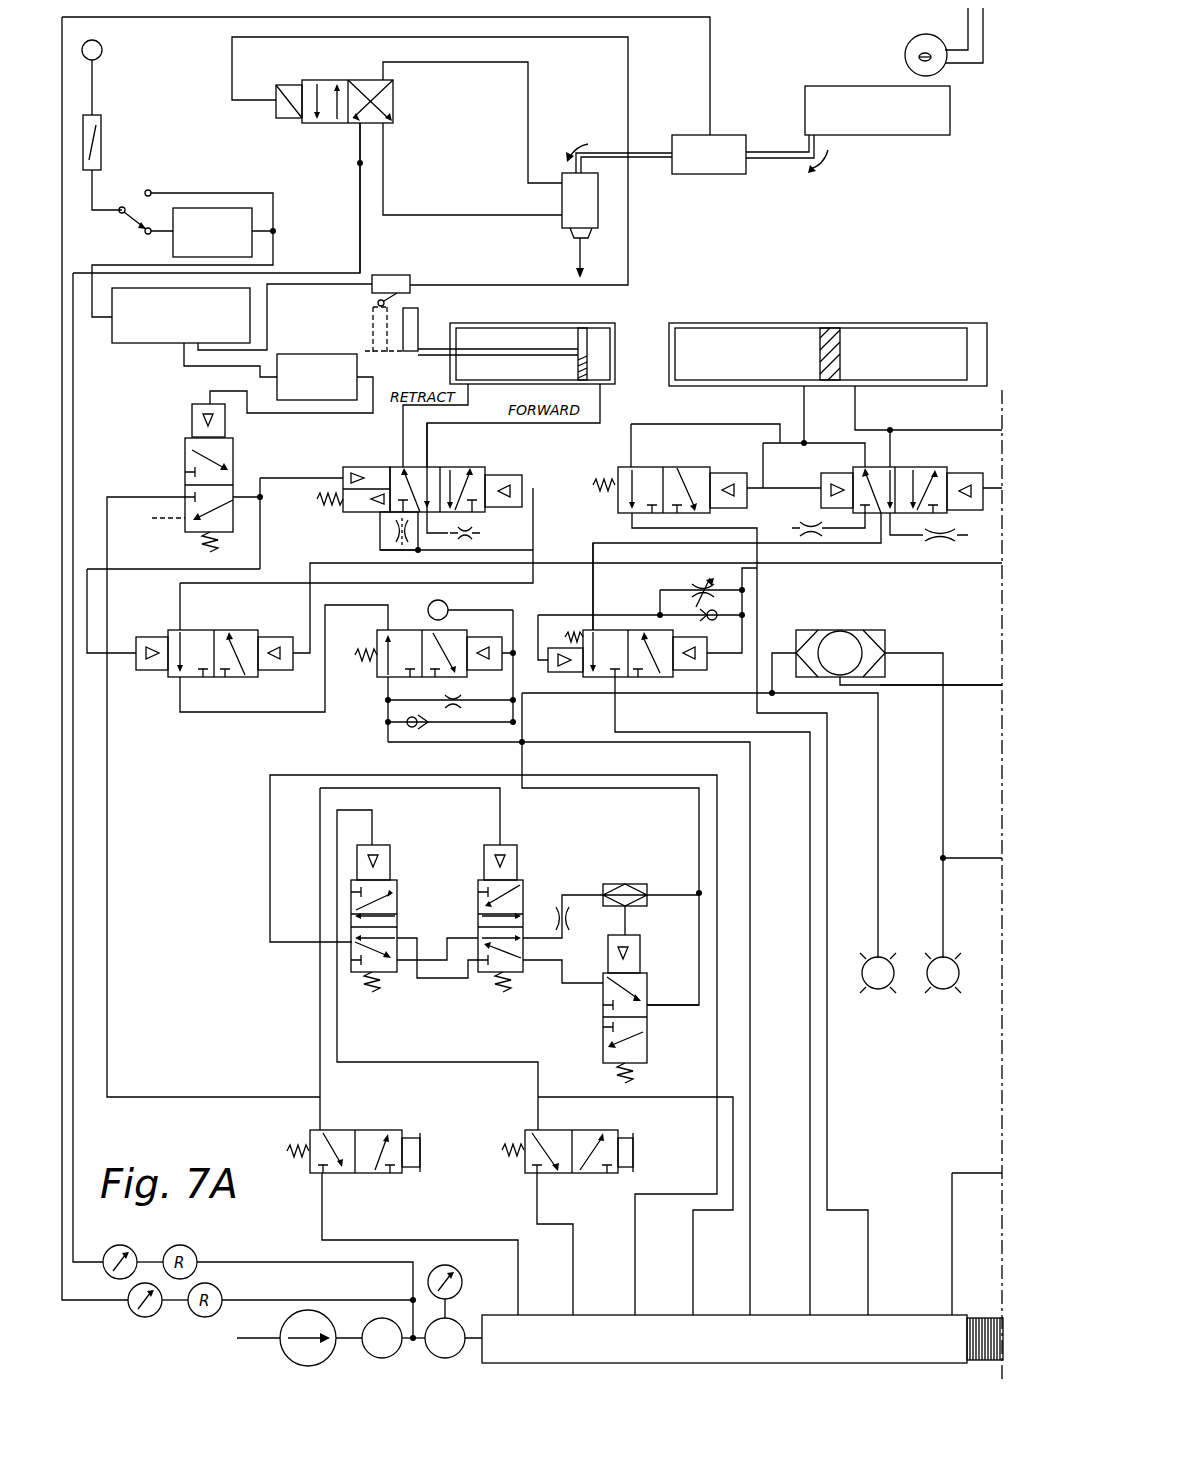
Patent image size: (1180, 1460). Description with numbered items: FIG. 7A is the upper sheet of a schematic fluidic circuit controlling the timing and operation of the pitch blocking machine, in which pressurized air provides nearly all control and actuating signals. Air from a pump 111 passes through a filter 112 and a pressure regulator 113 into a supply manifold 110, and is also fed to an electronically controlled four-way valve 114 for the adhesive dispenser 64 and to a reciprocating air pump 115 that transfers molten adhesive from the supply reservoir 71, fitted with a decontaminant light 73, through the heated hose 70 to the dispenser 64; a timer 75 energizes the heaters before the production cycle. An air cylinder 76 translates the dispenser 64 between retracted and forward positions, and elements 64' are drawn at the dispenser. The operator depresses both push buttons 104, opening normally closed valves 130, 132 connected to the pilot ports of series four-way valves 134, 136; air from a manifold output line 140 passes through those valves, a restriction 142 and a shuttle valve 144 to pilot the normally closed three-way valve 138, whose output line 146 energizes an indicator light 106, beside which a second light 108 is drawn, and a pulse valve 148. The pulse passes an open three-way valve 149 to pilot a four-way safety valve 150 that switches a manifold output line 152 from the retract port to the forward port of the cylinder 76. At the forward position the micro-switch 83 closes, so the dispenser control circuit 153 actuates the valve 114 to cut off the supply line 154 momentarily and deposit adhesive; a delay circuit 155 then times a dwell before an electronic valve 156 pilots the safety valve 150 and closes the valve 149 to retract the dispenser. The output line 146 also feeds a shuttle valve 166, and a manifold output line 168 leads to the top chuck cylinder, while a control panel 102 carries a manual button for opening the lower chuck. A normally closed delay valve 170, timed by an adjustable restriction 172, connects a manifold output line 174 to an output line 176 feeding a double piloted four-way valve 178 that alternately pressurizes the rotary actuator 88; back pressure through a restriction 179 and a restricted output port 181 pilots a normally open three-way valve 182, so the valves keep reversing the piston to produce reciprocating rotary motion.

The adhesive dispenser 64 is at (586, 211).
The dispenser position sensors 64' is at (471, 307).
The hose 70 is at (645, 150).
The supply tank 71 is at (863, 86).
The decontaminant light 73 is at (912, 40).
The timer 75 is at (252, 221).
The air cylinder 76 is at (616, 363).
The micro-switch 83 is at (399, 276).
The rotary actuator 88 is at (803, 323).
The control panel 102 is at (898, 688).
The push buttons 104 is at (421, 1155).
The indicator light 106 is at (876, 990).
The indicator lamp 108 is at (941, 990).
The supply manifold 110 is at (887, 1325).
The pump 111 is at (285, 1355).
The filter 112 is at (372, 1355).
The pressure regulator 113 is at (432, 1356).
The four-way valve 114 is at (323, 80).
The reciprocating air pump 115 is at (735, 168).
The normally closed valve 130 is at (575, 1173).
The normally closed valve 132 is at (372, 1173).
The four-way valve 134 is at (389, 890).
The four-way valve 136 is at (521, 890).
The three-way valve 138 is at (645, 1040).
The manifold output line 140 is at (270, 822).
The restriction 142 is at (572, 921).
The shuttle valve 144 is at (632, 884).
The output line 146 is at (697, 803).
The pulse valve 148 is at (410, 632).
The three-way valve 149 is at (240, 632).
The safety valve 150 is at (457, 468).
The manifold output line 152 is at (493, 552).
The dispenser control circuit 153 is at (152, 340).
The supply line 154 is at (357, 163).
The delay circuit 155 is at (323, 354).
The electronic valve 156 is at (235, 458).
The shuttle valve 166 is at (826, 630).
The manifold output line 168 is at (952, 1200).
The delay valve 170 is at (605, 677).
The adjustable restriction 172 is at (692, 583).
The manifold output line 174 is at (638, 733).
The output line 176 is at (596, 583).
The four-way valve 178 is at (921, 472).
The restriction 179 is at (943, 546).
The restricted output port 181 is at (806, 524).
The three-way valve 182 is at (688, 468).